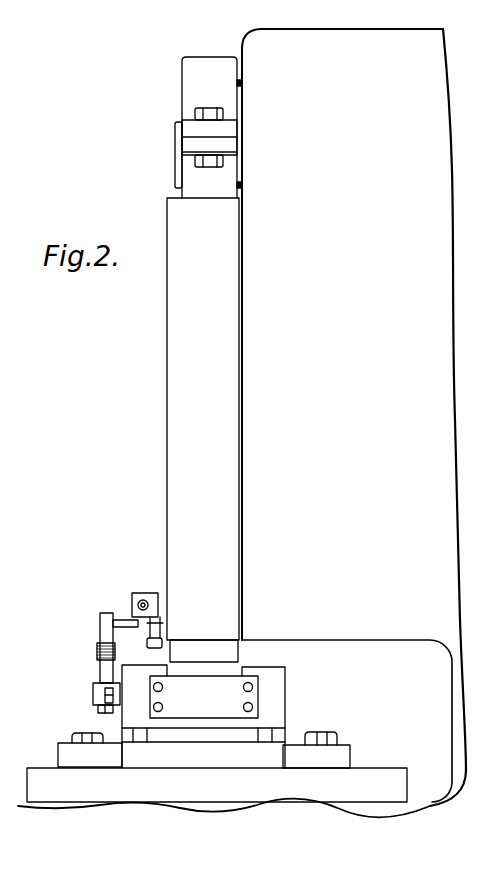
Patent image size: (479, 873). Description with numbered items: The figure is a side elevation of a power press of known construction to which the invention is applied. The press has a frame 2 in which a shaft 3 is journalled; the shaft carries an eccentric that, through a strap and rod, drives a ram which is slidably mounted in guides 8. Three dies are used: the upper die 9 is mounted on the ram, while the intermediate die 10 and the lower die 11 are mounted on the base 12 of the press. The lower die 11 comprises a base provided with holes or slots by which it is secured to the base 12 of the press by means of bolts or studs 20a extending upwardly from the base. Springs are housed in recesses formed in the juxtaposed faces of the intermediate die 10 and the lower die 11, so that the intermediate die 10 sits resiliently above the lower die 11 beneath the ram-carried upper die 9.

The frame 2 is at (272, 77).
The shaft 3 is at (175, 157).
The guides 8 is at (187, 353).
The upper die 9 is at (220, 650).
The intermediate die 10 is at (133, 677).
The lower die 11 is at (137, 752).
The base 12 is at (363, 777).
The bolts or studs 20a is at (87, 738).